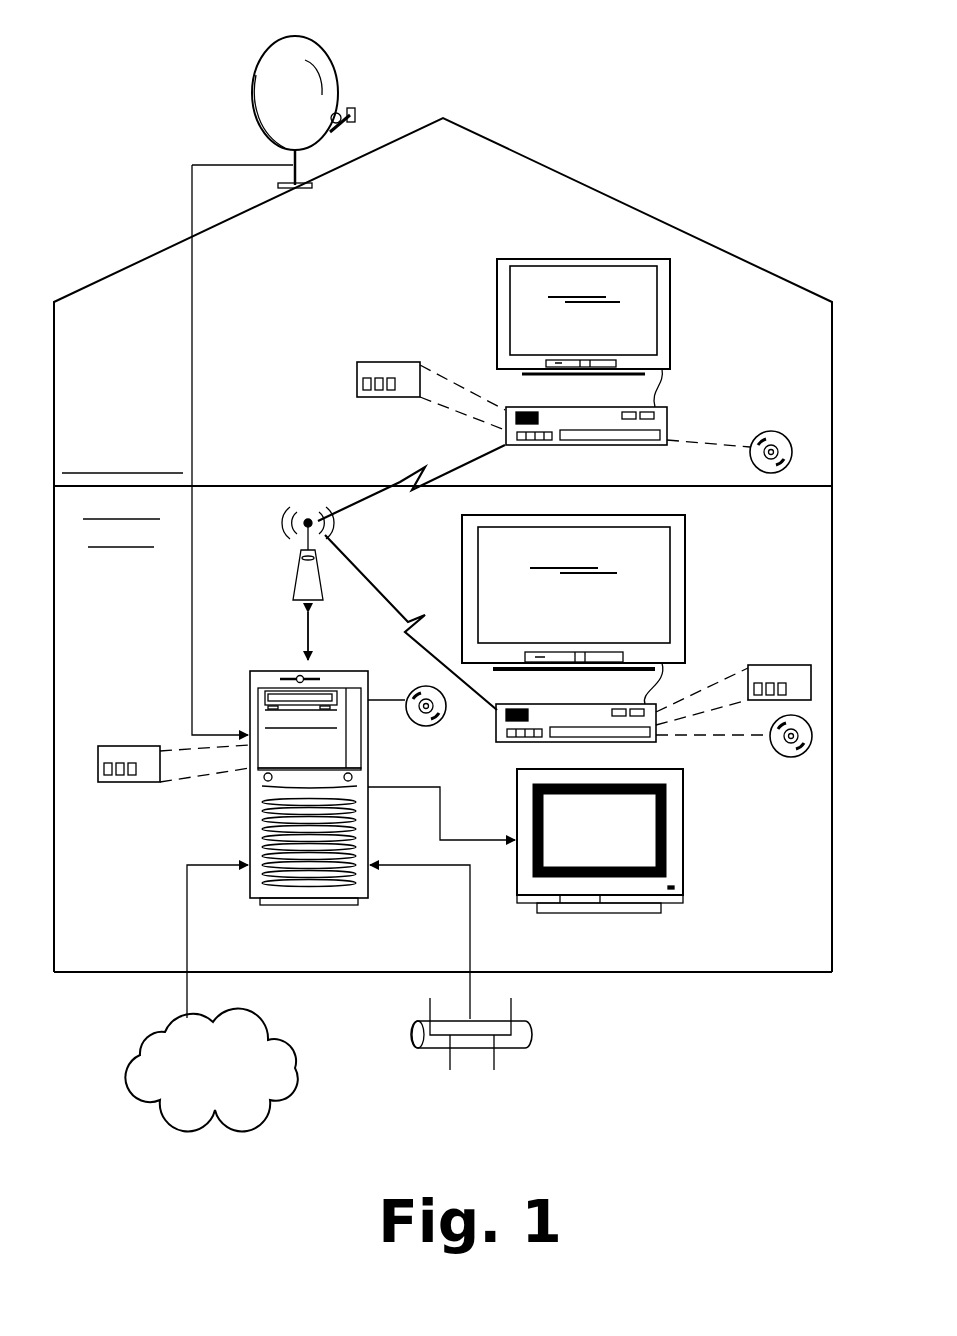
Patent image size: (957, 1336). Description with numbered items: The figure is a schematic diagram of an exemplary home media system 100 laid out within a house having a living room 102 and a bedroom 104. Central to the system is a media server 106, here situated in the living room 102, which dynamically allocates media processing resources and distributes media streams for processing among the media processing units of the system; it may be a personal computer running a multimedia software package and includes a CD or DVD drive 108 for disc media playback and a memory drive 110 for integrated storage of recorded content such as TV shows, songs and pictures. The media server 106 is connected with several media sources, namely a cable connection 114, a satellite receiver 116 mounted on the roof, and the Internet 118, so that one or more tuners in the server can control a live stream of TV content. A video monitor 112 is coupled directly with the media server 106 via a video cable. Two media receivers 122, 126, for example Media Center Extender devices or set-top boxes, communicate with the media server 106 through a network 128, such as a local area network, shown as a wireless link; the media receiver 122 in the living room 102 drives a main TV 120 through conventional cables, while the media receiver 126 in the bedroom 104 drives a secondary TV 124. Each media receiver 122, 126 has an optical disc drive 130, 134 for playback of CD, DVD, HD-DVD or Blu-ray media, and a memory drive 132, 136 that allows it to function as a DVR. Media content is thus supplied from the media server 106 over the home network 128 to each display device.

The home media system 100 is at (662, 125).
The living room 102 is at (752, 972).
The bedroom 104 is at (178, 242).
The media server 106 is at (274, 671).
The CD or DVD drive 108 is at (440, 725).
The memory drive 110 is at (137, 746).
The video monitor 112 is at (683, 840).
The cable connection 114 is at (532, 1033).
The satellite receiver 116 is at (280, 60).
The Internet 118 is at (134, 1068).
The main TV 120 is at (685, 593).
The media receiver 122 is at (520, 743).
The secondary TV 124 is at (565, 259).
The media receiver 126 is at (667, 425).
The network 128 is at (298, 580).
The optical disc drive 130 is at (796, 757).
The memory drive 132 is at (792, 665).
The optical disc drive 134 is at (790, 433).
The memory drive 136 is at (358, 376).